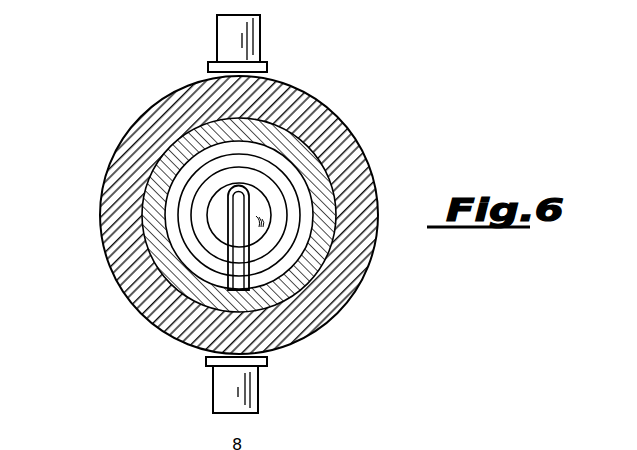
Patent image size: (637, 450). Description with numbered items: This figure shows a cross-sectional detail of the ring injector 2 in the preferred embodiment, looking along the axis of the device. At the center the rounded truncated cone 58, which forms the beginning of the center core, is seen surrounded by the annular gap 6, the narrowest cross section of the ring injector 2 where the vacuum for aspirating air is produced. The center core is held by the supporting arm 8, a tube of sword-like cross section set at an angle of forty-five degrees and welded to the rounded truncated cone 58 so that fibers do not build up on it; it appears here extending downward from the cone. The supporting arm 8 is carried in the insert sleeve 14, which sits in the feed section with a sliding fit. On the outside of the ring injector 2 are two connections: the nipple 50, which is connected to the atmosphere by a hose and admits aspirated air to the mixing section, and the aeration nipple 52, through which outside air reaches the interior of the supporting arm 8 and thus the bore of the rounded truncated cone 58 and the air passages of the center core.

The ring injector 2 is at (135, 103).
The annular gap 6 is at (183, 229).
The supporting arm 8 is at (238, 258).
The insert sleeve 14 is at (300, 280).
The nipple 50 is at (238, 41).
The aeration nipple 52 is at (238, 391).
The rounded truncated cone 58 is at (258, 190).